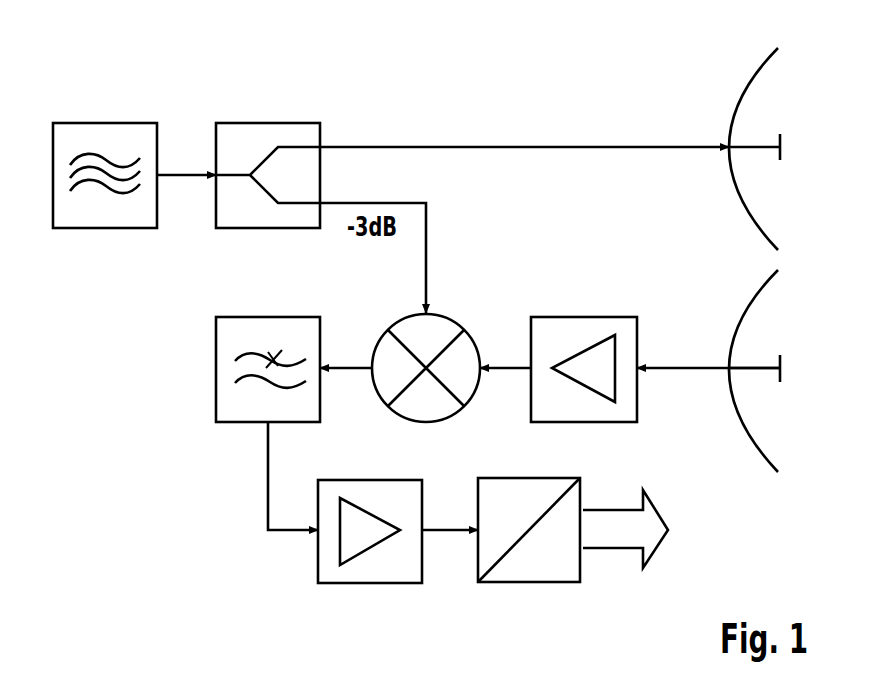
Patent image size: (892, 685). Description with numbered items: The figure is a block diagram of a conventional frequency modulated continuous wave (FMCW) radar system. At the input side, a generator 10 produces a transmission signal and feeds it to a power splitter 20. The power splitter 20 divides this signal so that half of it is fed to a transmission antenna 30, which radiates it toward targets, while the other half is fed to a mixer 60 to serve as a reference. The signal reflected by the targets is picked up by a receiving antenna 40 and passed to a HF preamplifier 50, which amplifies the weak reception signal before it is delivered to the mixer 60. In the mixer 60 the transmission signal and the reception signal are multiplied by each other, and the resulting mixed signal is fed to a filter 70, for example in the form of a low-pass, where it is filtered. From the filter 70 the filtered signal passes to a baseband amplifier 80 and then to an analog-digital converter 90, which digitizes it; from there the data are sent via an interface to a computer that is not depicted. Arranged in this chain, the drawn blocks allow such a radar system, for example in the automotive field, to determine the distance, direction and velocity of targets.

The generator 10 is at (107, 123).
The power splitter 20 is at (272, 123).
The transmission antenna 30 is at (760, 74).
The receiving antenna 40 is at (765, 455).
The HF preamplifier 50 is at (588, 317).
The mixer 60 is at (455, 322).
The filter 70 is at (216, 368).
The baseband amplifier 80 is at (366, 584).
The analog-digital converter 90 is at (537, 583).